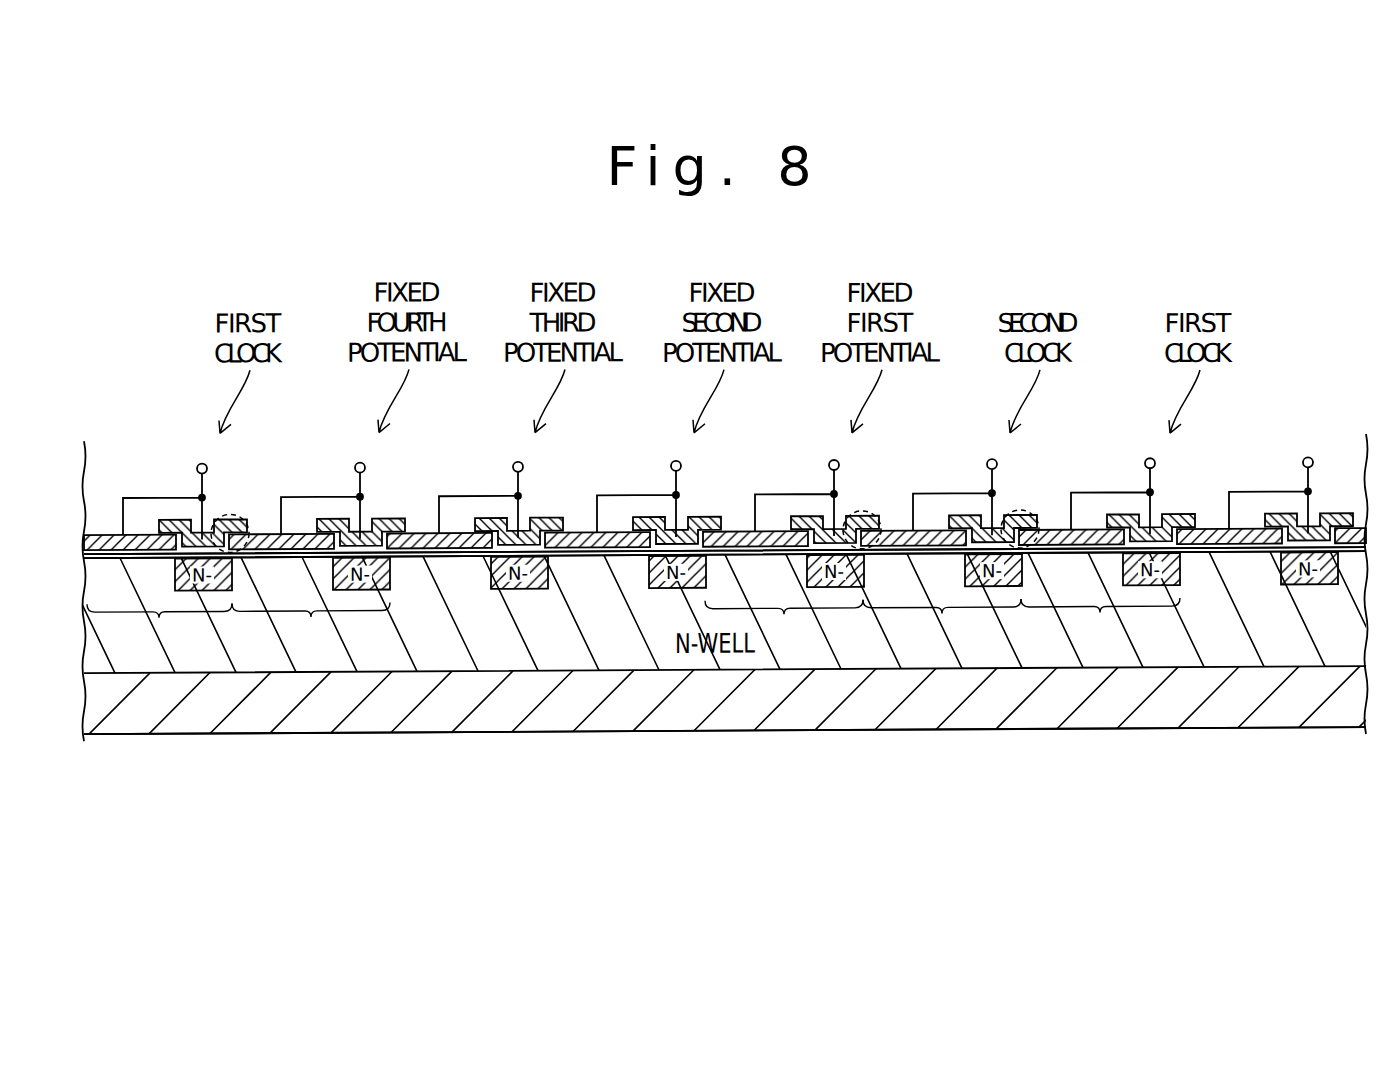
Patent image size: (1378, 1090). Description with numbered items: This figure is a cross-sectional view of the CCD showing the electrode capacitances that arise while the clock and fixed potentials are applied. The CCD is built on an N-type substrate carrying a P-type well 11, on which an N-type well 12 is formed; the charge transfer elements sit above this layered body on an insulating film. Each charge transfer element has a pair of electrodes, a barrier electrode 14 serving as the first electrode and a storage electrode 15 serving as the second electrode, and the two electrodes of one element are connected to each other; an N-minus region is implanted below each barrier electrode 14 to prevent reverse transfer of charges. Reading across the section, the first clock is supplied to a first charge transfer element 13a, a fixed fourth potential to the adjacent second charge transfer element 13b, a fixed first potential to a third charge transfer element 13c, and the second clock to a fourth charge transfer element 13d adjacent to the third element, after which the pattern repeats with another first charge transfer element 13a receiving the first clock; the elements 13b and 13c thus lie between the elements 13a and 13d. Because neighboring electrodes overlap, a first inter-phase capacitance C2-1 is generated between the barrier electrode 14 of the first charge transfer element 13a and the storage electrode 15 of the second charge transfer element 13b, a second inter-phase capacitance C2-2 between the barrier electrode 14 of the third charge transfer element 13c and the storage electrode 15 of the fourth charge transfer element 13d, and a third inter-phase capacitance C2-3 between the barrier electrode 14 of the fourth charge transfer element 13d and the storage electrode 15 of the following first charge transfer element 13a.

The P-type well 11 is at (218, 733).
The N-type well 12 is at (355, 733).
The first charge transfer element 13a is at (633, 624).
The second charge transfer element 13b is at (311, 627).
The third charge transfer element 13c is at (784, 624).
The fourth charge transfer element 13d is at (942, 623).
The barrier electrode 14 is at (228, 519).
The storage electrode 15 is at (124, 557).
The first inter-phase capacitance C2-1 is at (238, 516).
The second inter-phase capacitance C2-2 is at (871, 516).
The third inter-phase capacitance C2-3 is at (1030, 517).